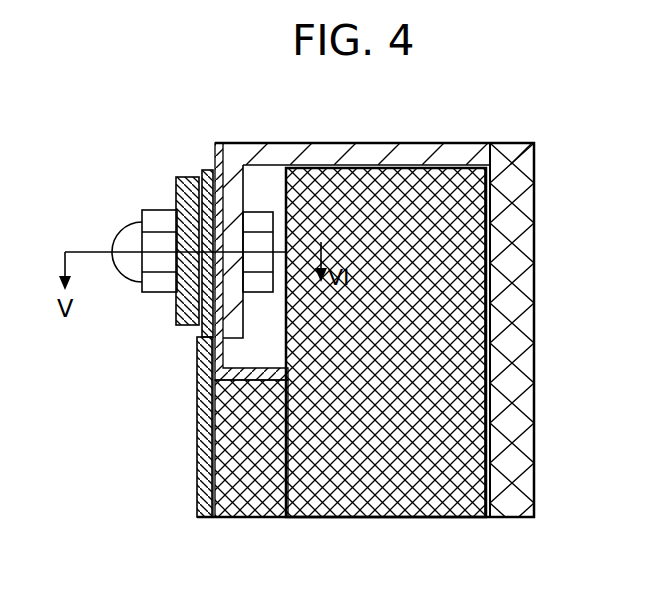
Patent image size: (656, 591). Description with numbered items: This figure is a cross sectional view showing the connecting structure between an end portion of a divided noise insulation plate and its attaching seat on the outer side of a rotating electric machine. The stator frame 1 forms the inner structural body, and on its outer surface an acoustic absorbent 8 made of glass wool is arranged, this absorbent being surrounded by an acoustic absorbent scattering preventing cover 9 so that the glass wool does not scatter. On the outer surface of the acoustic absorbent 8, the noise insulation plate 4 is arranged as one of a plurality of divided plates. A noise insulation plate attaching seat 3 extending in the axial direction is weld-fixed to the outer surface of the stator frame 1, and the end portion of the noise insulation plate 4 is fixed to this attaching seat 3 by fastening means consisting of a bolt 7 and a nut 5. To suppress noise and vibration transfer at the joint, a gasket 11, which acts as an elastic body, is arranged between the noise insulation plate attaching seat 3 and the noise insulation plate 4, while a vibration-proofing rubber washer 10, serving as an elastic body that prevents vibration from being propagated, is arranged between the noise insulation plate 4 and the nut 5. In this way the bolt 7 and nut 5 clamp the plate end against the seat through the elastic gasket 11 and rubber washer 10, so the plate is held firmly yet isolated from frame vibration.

The stator frame 1 is at (522, 242).
The noise insulation plate attaching seat 3 is at (310, 143).
The noise insulation plate 4 is at (205, 453).
The nut 5 is at (152, 238).
The bolt 7 is at (273, 267).
The acoustic absorbent 8 is at (383, 175).
The acoustic absorbent scattering preventing cover 9 is at (490, 497).
The vibration-proofing rubber washer 10 is at (178, 197).
The gasket 11 is at (212, 340).